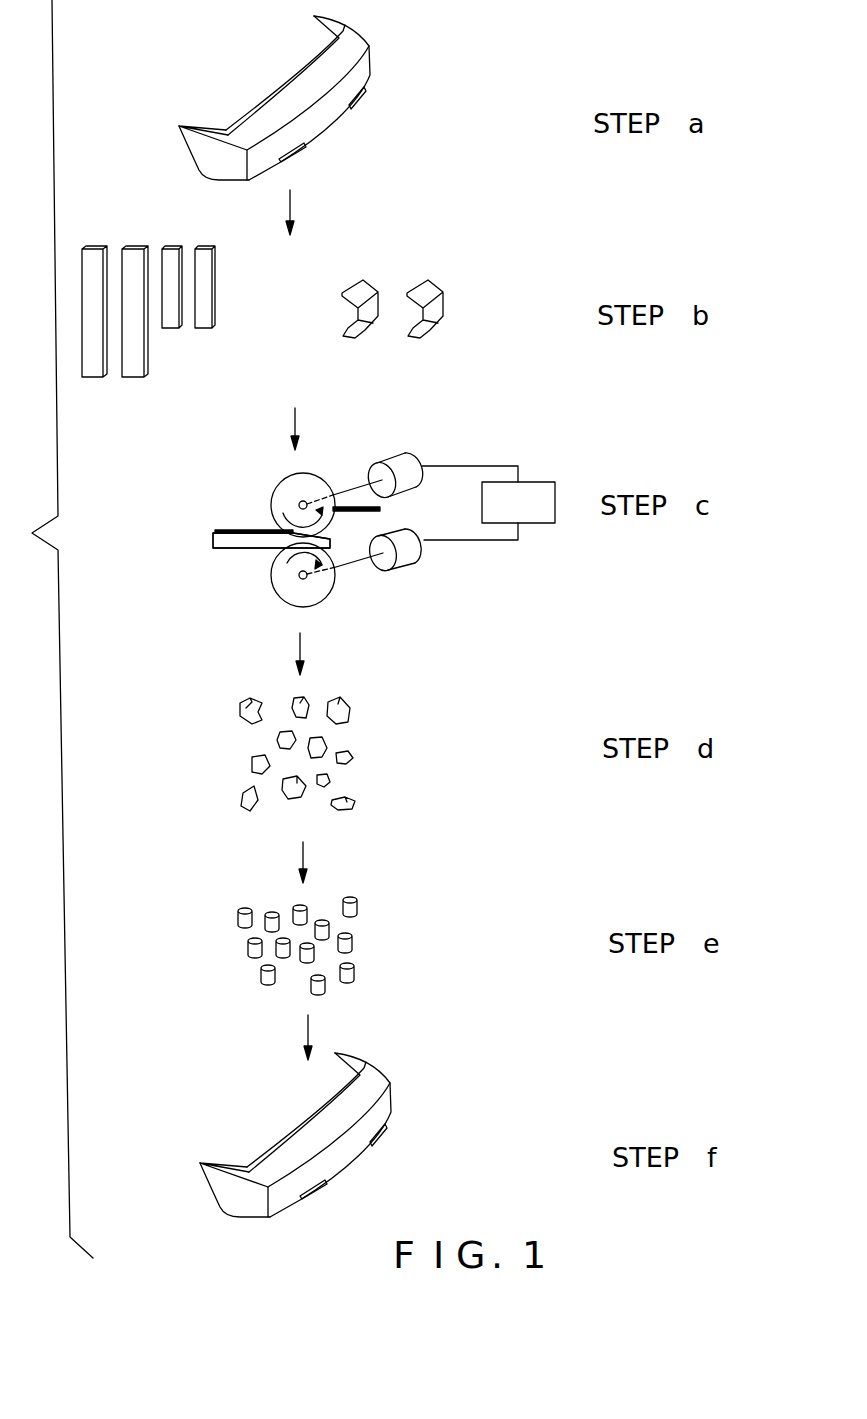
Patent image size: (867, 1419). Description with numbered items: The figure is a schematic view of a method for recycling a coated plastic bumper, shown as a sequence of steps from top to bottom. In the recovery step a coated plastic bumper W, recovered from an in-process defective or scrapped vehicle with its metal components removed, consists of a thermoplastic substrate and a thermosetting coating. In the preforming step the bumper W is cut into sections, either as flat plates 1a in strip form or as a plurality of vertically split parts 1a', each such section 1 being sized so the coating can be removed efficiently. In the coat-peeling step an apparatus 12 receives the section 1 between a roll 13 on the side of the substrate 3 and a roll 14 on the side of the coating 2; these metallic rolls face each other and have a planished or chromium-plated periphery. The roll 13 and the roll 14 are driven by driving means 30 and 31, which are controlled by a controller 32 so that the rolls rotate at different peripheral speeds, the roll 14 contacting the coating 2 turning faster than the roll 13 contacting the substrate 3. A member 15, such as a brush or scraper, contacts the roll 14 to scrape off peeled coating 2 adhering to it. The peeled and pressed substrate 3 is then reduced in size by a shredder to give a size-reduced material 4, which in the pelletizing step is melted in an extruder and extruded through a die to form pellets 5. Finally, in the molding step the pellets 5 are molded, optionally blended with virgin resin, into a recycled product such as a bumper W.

The coated plastic bumper W is at (365, 62).
The section 1 is at (327, 276).
The flat plates 1a is at (163, 343).
The vertically split parts 1a' is at (403, 339).
The coating 2 is at (240, 530).
The substrate 3 is at (215, 540).
The apparatus 12 is at (342, 484).
The roll 13 is at (338, 582).
The roll 14 is at (283, 490).
The member 15 is at (383, 515).
The driving means 30 is at (418, 562).
The driving means 31 is at (408, 458).
The controller 32 is at (540, 525).
The size-reduced material 4 is at (340, 711).
The pellets 5 is at (358, 907).